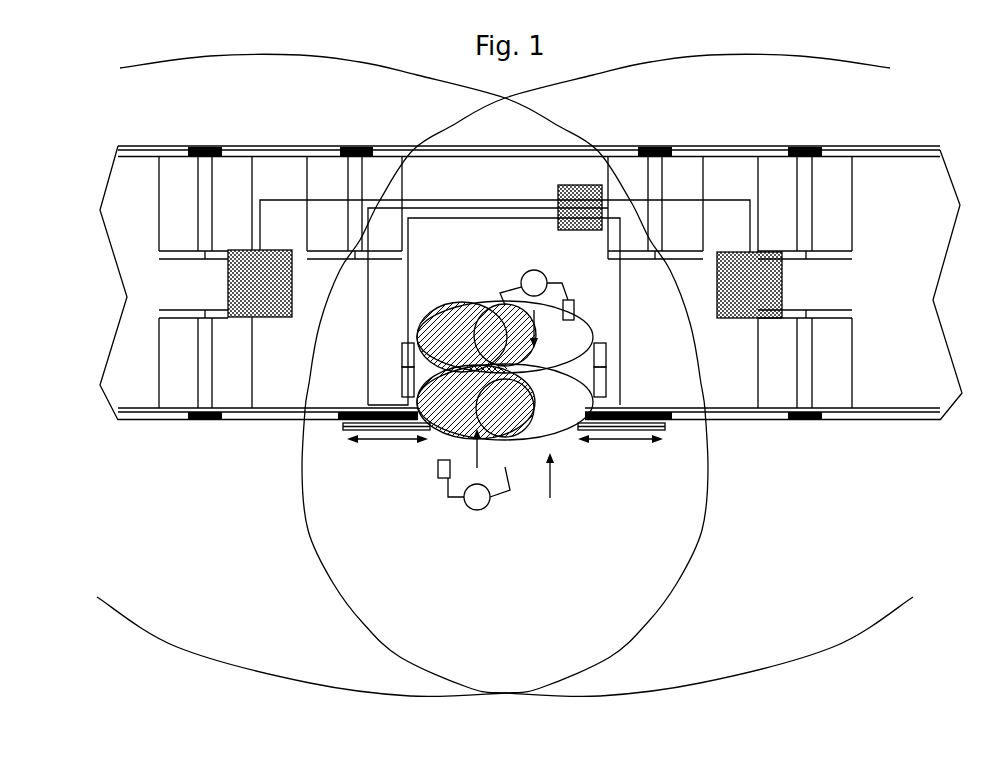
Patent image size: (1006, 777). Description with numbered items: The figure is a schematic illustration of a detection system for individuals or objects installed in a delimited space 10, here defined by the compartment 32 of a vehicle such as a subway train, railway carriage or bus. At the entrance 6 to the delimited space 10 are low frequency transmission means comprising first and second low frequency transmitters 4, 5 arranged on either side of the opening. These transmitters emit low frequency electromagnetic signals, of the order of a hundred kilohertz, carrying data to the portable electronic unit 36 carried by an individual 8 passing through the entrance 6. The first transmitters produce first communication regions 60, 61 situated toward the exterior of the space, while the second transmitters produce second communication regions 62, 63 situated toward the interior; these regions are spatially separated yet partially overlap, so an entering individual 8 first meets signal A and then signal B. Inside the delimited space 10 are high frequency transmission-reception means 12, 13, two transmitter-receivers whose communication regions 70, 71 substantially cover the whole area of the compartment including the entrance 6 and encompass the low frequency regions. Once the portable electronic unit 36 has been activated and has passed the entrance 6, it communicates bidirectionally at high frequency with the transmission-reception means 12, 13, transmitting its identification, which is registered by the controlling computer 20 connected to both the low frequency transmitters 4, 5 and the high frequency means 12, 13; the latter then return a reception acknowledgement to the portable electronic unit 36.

The delimited space 10 is at (531, 260).
The compartment 32 is at (274, 129).
The high frequency transmission-reception means 12 is at (292, 285).
The high frequency transmission-reception means 13 is at (782, 285).
The controlling computer 20 is at (582, 185).
The second low frequency transmitter 5 is at (402, 355).
The first low frequency transmitter 4 is at (402, 382).
The first communication region 60 is at (467, 410).
The first communication region 61 is at (570, 411).
The second communication region 62 is at (467, 345).
The second communication region 63 is at (570, 353).
The individual 8 is at (543, 277).
The portable electronic unit 36 is at (575, 305).
The entrance 6 is at (551, 487).
The communication region 70 is at (151, 593).
The communication region 71 is at (886, 593).